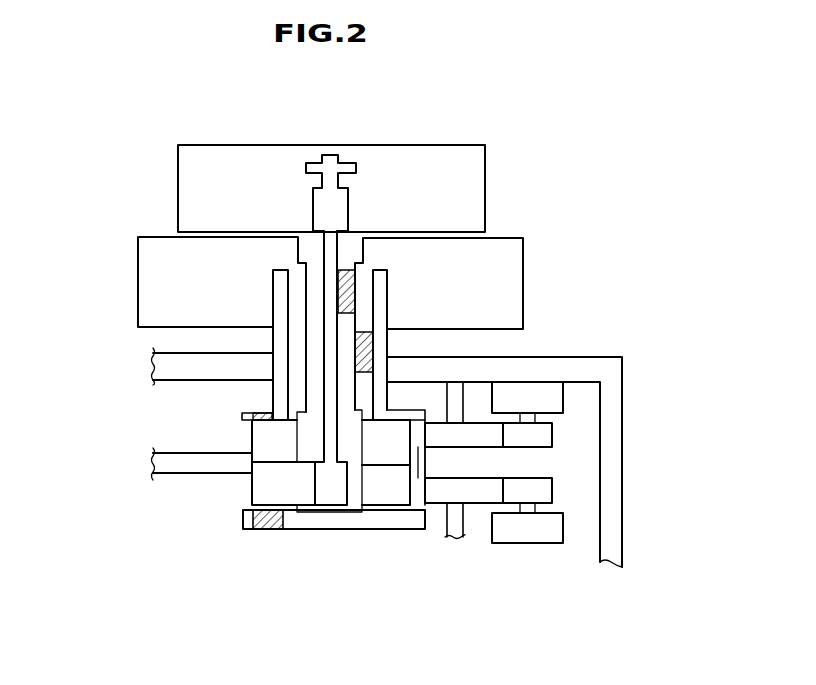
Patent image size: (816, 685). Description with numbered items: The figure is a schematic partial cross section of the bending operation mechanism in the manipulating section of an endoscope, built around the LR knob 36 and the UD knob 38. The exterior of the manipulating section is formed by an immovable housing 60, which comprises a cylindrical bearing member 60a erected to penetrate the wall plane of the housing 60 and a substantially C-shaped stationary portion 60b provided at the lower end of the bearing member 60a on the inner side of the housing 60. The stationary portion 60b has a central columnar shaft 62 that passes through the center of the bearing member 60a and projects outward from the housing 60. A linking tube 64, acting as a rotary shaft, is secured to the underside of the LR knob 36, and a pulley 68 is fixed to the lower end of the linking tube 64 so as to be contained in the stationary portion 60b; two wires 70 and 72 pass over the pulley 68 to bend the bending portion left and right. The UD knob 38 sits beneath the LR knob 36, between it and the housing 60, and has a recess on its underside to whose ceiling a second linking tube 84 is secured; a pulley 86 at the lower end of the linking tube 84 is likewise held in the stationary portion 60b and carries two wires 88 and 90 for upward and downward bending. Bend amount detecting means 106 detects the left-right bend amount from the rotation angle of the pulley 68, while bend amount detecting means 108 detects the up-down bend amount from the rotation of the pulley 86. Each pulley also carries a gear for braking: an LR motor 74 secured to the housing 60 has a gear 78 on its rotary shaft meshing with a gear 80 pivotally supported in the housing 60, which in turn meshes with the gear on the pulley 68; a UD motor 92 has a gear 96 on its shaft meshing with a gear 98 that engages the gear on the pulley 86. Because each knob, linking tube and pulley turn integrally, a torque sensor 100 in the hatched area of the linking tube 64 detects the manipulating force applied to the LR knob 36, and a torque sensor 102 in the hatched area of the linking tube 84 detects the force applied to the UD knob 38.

The LR knob 36 is at (457, 182).
The UD knob 38 is at (513, 270).
The housing 60 is at (622, 497).
The bearing member 60a is at (280, 313).
The stationary portion 60b is at (393, 517).
The central columnar shaft 62 is at (330, 287).
The linking tube 64 is at (313, 322).
The pulley 68 is at (250, 492).
The wire 70 is at (163, 478).
The wire 72 is at (171, 518).
The LR brake motor 74 is at (533, 543).
The gear 78 is at (542, 492).
The gear 80 is at (478, 495).
The linking tube 84 is at (297, 382).
The pulley 86 is at (250, 438).
The wire 88 is at (167, 450).
The wire 90 is at (160, 438).
The UD brake motor 92 is at (510, 397).
The gear 96 is at (510, 437).
The gear 98 is at (480, 437).
The torque sensor 100 is at (357, 300).
The torque sensor 102 is at (372, 373).
The bend amount detecting means 106 is at (270, 530).
The bend amount detecting means 108 is at (265, 413).